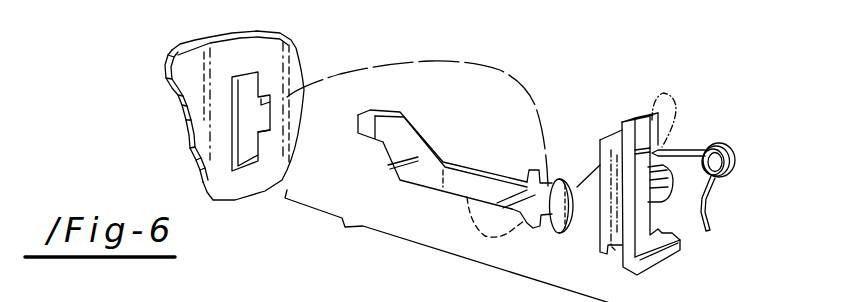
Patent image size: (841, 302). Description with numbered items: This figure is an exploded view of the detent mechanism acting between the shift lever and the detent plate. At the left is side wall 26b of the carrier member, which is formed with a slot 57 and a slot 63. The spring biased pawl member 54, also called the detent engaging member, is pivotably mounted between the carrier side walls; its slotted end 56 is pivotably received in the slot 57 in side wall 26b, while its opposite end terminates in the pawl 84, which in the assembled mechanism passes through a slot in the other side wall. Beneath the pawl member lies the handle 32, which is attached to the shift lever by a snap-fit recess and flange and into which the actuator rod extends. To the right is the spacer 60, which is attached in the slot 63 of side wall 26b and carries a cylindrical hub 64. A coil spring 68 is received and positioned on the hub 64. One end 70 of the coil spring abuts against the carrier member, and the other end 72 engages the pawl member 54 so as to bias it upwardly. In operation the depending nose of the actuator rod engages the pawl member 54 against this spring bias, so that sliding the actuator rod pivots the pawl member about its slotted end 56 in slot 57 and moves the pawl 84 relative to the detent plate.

The side wall 26b is at (188, 68).
The slot 63 is at (238, 135).
The slot 57 is at (258, 117).
The handle 32 is at (447, 233).
The pawl member 54 is at (468, 148).
The pawl 84 is at (362, 131).
The slotted end 56 is at (557, 165).
The spacer 60 is at (677, 197).
The cylindrical hub 64 is at (674, 184).
The coil spring 68 is at (725, 161).
The one end of coil spring 70 is at (708, 220).
The other end of coil spring 72 is at (660, 149).